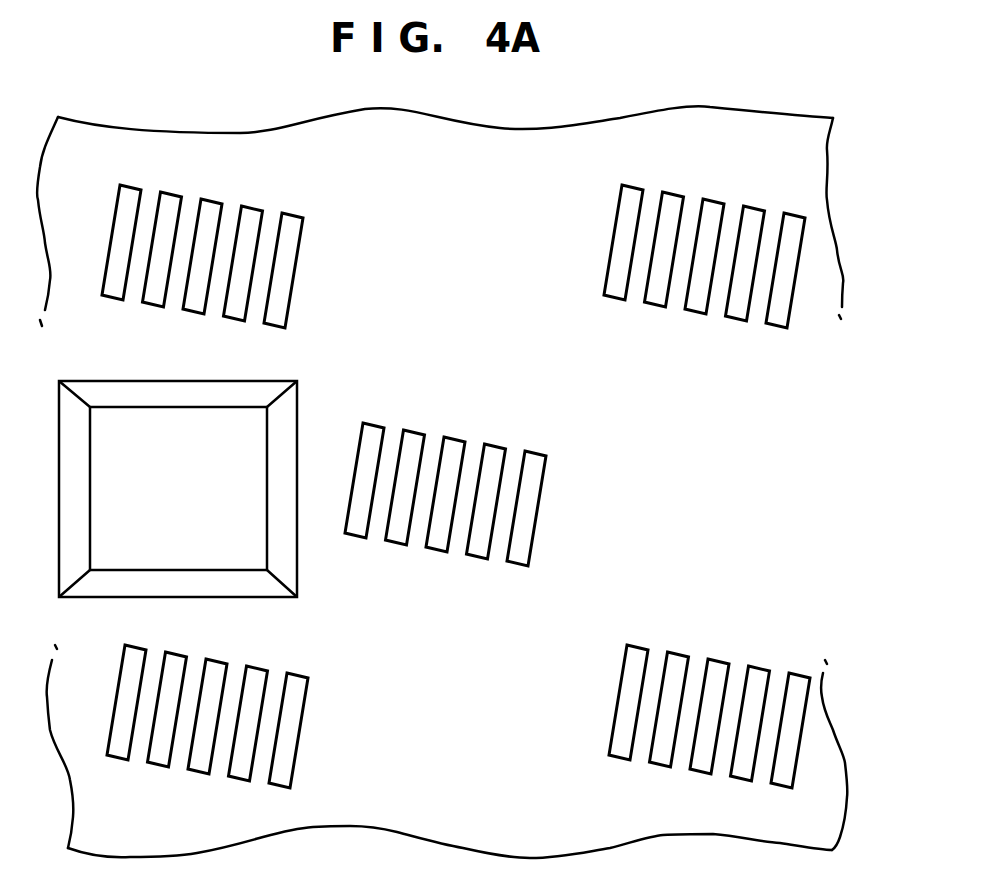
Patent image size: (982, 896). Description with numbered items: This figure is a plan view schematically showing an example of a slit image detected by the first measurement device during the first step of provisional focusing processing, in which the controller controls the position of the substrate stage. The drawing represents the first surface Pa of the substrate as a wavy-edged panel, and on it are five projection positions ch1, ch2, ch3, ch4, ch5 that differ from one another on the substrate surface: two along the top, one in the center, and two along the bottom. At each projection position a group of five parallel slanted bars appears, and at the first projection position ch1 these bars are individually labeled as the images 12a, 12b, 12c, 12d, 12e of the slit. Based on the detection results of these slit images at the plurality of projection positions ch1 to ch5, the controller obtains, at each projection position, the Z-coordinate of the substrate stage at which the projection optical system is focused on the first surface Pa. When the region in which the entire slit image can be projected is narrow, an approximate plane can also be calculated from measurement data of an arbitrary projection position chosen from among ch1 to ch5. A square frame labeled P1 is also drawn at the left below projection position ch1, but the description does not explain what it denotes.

The image of the slit 12a is at (132, 185).
The image of the slit 12b is at (175, 192).
The image of the slit 12c is at (216, 202).
The image of the slit 12d is at (254, 208).
The image of the slit 12e is at (294, 216).
The square pad P1 is at (116, 388).
The first surface Pa is at (567, 171).
The projection position ch1 is at (218, 242).
The projection position ch2 is at (704, 271).
The projection position ch3 is at (445, 514).
The projection position ch4 is at (207, 739).
The projection position ch5 is at (709, 735).